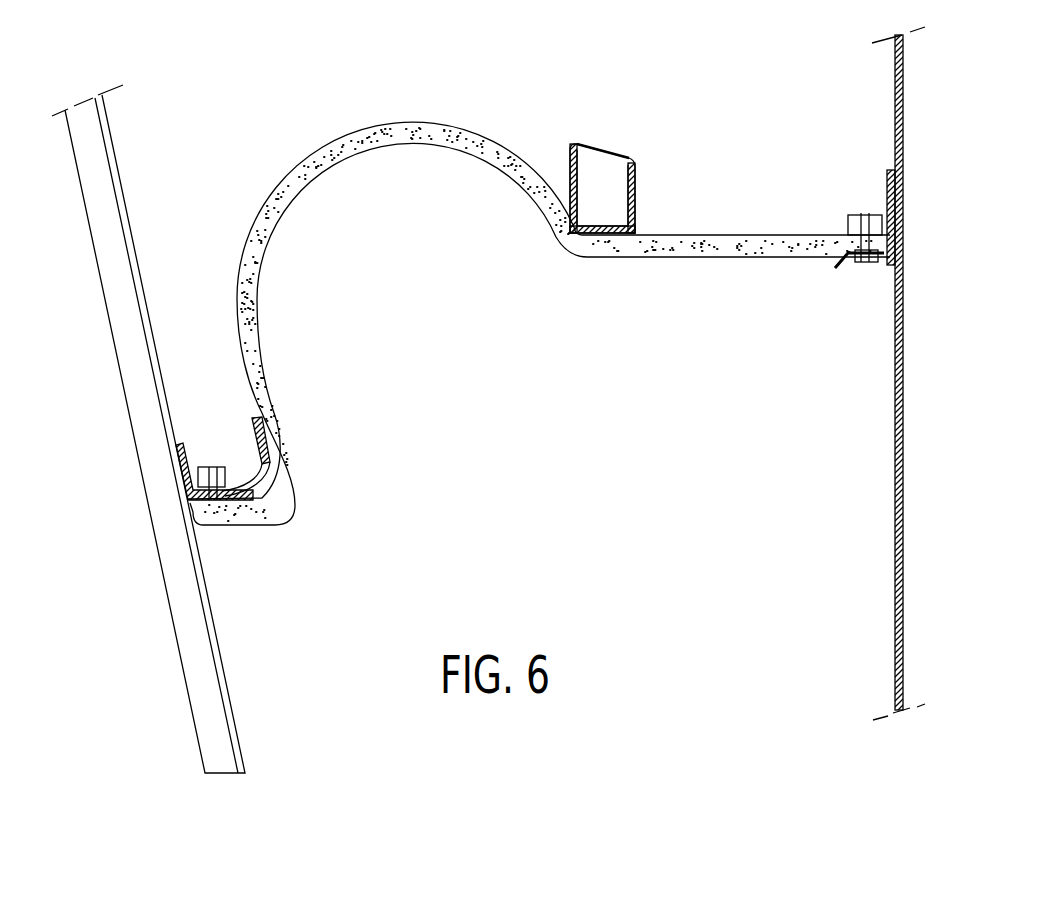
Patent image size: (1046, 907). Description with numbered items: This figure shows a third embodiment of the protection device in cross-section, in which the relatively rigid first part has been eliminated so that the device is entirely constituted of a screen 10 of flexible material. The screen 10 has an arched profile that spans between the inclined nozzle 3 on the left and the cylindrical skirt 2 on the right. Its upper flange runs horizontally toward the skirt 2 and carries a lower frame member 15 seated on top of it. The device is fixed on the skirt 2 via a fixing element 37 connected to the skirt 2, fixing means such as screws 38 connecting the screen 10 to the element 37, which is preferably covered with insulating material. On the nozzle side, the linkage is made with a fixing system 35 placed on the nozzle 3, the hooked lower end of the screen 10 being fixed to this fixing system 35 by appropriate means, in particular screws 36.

The skirt 2 is at (897, 605).
The nozzle 3 is at (176, 646).
The screen 10 is at (755, 230).
The lower frame member 15 is at (636, 178).
The fixing system 35 is at (185, 462).
The screws 36 is at (190, 504).
The fixing element 37 is at (850, 268).
The screws 38 is at (862, 214).